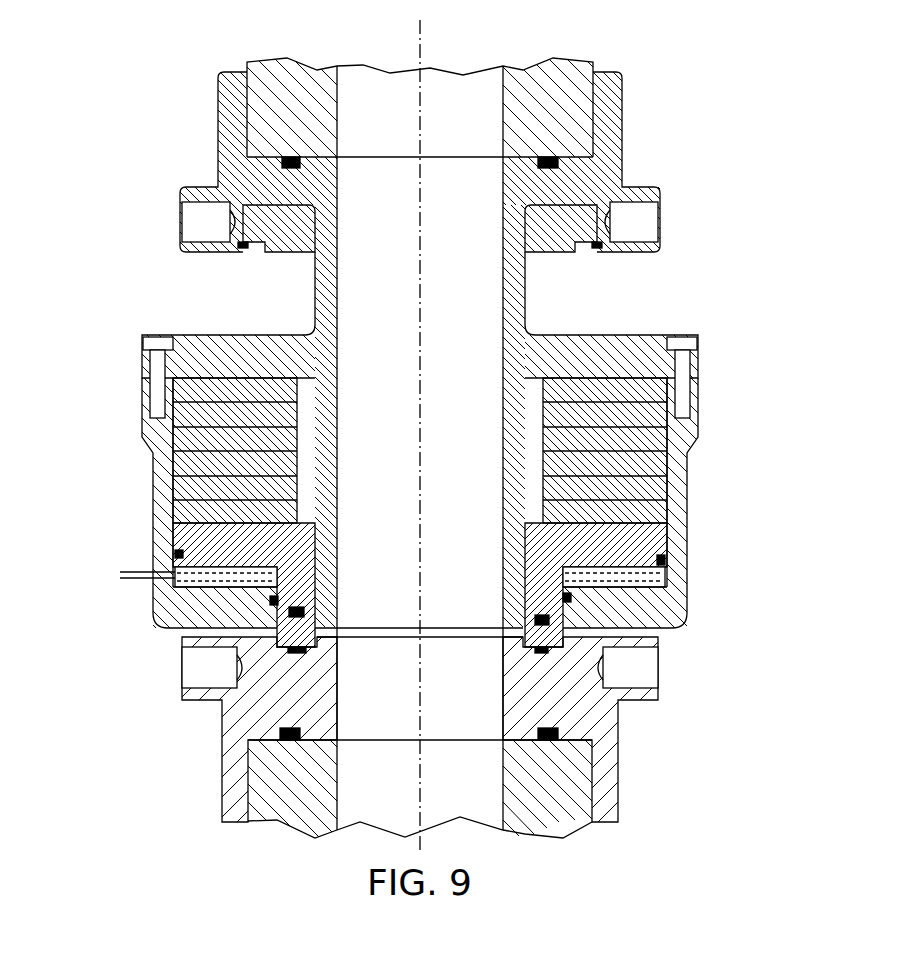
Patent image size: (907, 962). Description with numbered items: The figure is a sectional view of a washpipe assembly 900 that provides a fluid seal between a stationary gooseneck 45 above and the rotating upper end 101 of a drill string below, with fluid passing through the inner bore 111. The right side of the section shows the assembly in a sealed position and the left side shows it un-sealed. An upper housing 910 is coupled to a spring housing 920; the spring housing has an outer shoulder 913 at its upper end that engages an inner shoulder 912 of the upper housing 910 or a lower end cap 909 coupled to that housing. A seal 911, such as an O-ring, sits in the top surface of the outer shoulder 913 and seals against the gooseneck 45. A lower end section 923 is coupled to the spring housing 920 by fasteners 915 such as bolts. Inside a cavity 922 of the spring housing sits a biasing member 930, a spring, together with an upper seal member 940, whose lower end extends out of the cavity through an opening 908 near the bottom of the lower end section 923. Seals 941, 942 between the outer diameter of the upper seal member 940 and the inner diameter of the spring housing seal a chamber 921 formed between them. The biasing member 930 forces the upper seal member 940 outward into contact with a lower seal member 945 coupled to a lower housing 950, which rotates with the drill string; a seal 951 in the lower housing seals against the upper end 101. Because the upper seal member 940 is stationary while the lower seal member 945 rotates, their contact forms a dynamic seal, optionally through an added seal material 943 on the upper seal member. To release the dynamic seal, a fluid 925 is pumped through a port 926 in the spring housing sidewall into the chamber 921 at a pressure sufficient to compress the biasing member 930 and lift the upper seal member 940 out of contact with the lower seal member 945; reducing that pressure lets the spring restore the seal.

The gooseneck 45 is at (553, 90).
The seal 911 is at (547, 156).
The outer shoulder 913 is at (515, 152).
The upper housing 910 is at (622, 122).
The lower end cap 909 is at (275, 243).
The inner shoulder 912 is at (577, 253).
The inner bore 111 is at (502, 268).
The spring housing 920 is at (700, 358).
The fasteners 915 is at (676, 336).
The lower end section 923 is at (153, 458).
The biasing member 930 is at (690, 440).
The cavity 922 is at (665, 455).
The upper seal member 940 is at (668, 548).
The seal 941 is at (664, 566).
The fluid 925 is at (133, 577).
The port 926 is at (153, 572).
The chamber 921 is at (203, 588).
The seal 942 is at (572, 602).
The seal material 943 is at (300, 606).
The opening 908 is at (650, 633).
The lower housing 950 is at (618, 730).
The lower seal member 945 is at (625, 670).
The seal 951 is at (540, 728).
The upper end 101 is at (553, 795).
The washpipe assembly 900 is at (802, 108).